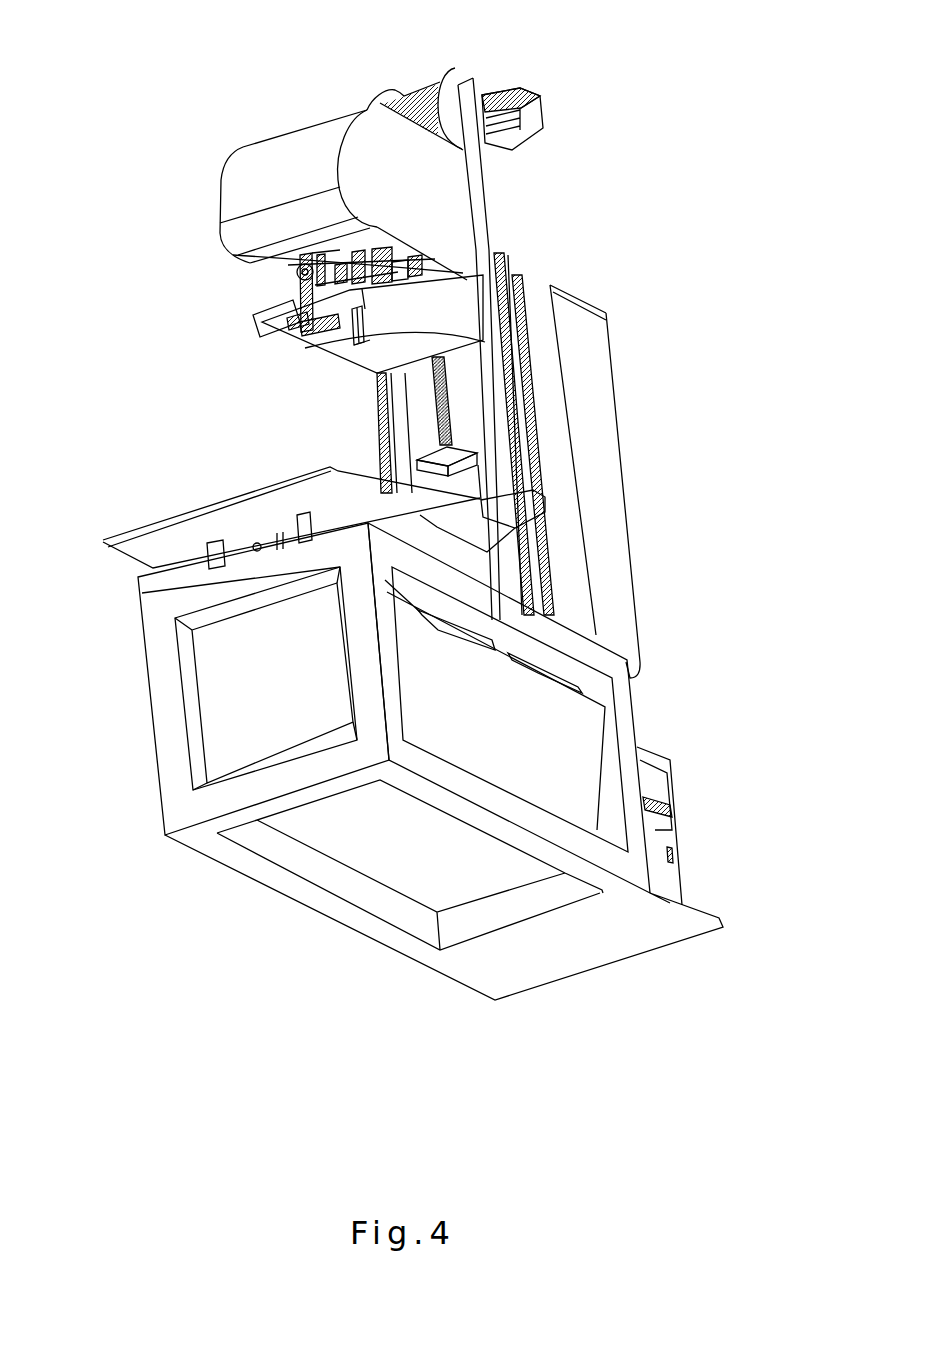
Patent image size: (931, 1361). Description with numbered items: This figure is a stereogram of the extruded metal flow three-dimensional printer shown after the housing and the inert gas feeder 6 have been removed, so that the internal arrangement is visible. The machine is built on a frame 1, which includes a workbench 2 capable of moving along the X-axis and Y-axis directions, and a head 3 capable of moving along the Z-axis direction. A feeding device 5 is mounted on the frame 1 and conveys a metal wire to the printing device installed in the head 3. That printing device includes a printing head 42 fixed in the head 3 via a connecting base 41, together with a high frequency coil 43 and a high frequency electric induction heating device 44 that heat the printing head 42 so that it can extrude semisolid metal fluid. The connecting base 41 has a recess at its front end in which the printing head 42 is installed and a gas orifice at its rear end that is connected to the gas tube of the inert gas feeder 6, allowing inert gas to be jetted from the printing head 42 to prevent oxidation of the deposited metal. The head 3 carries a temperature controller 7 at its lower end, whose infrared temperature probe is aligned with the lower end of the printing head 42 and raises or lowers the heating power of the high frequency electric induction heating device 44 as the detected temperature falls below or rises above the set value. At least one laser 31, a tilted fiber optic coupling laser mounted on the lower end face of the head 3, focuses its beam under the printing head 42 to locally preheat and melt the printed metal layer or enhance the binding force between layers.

The frame 1 is at (163, 613).
The workbench 2 is at (210, 500).
The head 3 is at (435, 225).
The feeding device 5 is at (250, 278).
The inert gas feeder 6 is at (217, 697).
The temperature controller 7 is at (498, 358).
The laser 31 is at (400, 296).
The connecting base 41 is at (455, 278).
The printing head 42 is at (293, 297).
The high frequency coil 43 is at (318, 328).
The high frequency electric induction heating device 44 is at (668, 828).